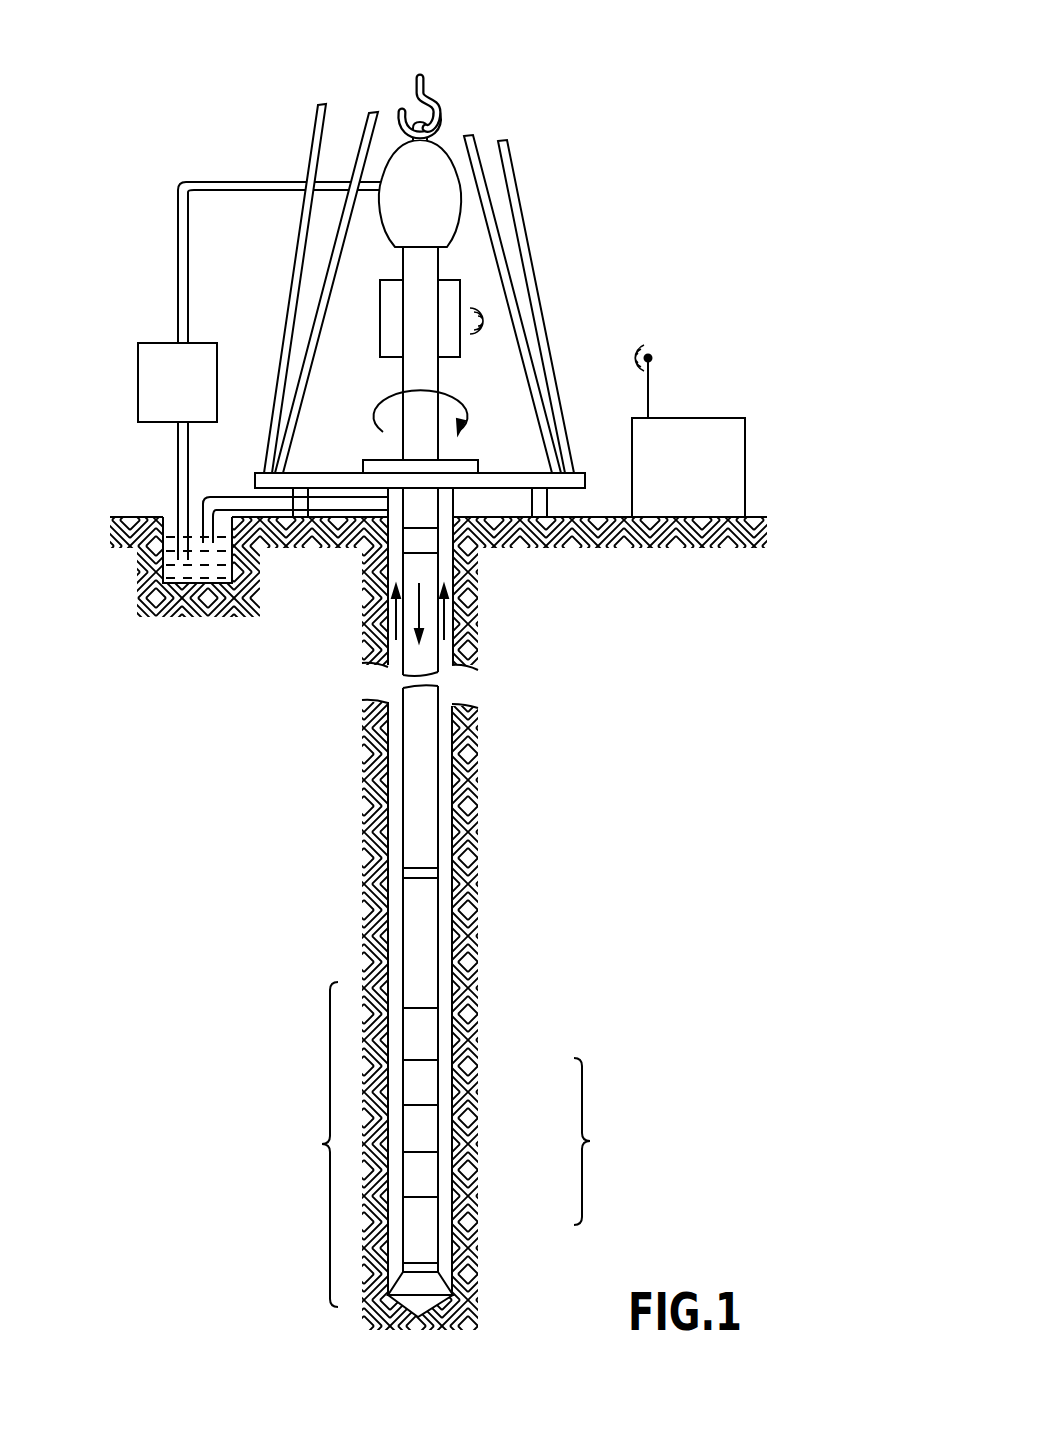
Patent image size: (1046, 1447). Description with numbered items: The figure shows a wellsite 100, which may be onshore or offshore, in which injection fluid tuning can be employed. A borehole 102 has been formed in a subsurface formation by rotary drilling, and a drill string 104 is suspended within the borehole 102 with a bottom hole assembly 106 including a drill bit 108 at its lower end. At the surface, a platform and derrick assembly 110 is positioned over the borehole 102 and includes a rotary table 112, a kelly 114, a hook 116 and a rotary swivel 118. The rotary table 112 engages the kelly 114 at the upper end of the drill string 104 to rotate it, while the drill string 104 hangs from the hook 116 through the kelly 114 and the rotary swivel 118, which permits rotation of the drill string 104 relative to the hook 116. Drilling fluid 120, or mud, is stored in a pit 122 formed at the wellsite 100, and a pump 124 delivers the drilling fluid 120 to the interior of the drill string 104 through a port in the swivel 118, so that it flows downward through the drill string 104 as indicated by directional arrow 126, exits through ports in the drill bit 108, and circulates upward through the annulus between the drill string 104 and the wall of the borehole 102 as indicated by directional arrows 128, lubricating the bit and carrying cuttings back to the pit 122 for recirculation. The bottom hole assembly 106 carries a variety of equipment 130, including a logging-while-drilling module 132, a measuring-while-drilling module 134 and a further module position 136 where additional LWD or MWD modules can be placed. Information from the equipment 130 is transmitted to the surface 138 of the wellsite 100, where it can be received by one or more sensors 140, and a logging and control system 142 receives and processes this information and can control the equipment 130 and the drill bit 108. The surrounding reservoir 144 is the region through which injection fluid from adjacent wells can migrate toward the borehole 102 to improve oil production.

The wellsite 100 is at (645, 46).
The borehole 102 is at (455, 552).
The drill string 104 is at (415, 522).
The bottom hole assembly 106 is at (303, 1144).
The drill bit 108 is at (425, 1288).
The platform and derrick assembly 110 is at (550, 192).
The rotary table 112 is at (477, 458).
The kelly 114 is at (420, 378).
The hook 116 is at (416, 82).
The rotary swivel 118 is at (387, 220).
The drilling fluid 120 is at (200, 577).
The pit 122 is at (170, 515).
The pump 124 is at (138, 386).
The directional arrow 126 is at (415, 617).
The directional arrows 128 is at (397, 612).
The equipment 130 is at (605, 1141).
The logging-while-drilling module 132 is at (422, 1088).
The measuring-while-drilling module 134 is at (423, 1140).
The position of additional LWD and/or MWD module 136 is at (430, 1173).
The surface 138 is at (763, 512).
The sensors 140 is at (422, 1225).
The logging and control system 142 is at (708, 418).
The reservoir 144 is at (320, 827).